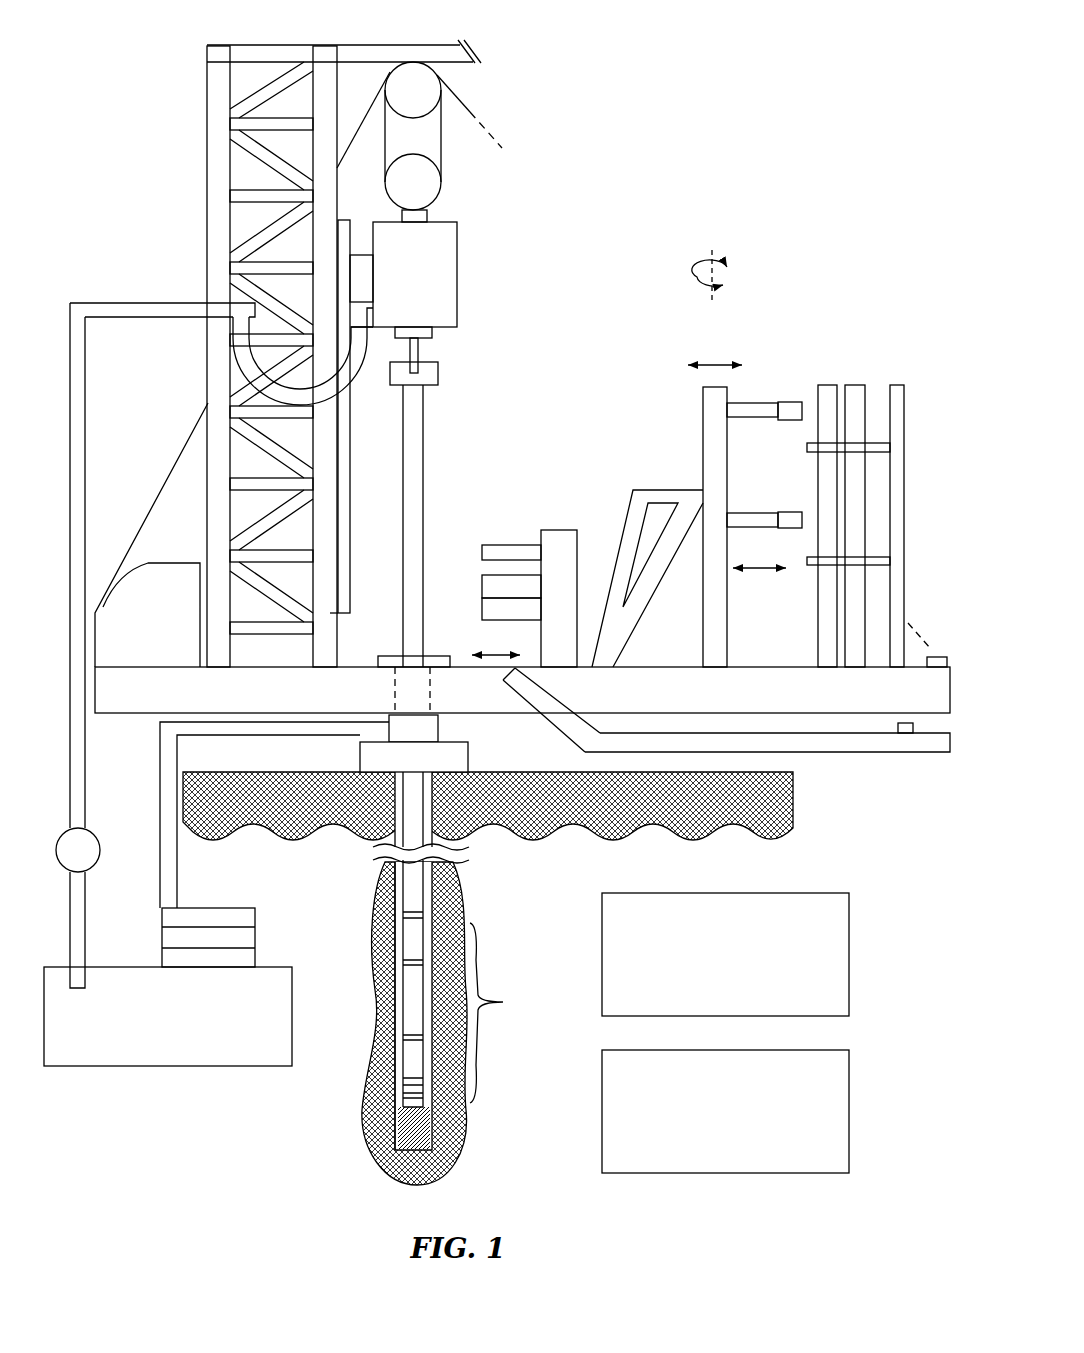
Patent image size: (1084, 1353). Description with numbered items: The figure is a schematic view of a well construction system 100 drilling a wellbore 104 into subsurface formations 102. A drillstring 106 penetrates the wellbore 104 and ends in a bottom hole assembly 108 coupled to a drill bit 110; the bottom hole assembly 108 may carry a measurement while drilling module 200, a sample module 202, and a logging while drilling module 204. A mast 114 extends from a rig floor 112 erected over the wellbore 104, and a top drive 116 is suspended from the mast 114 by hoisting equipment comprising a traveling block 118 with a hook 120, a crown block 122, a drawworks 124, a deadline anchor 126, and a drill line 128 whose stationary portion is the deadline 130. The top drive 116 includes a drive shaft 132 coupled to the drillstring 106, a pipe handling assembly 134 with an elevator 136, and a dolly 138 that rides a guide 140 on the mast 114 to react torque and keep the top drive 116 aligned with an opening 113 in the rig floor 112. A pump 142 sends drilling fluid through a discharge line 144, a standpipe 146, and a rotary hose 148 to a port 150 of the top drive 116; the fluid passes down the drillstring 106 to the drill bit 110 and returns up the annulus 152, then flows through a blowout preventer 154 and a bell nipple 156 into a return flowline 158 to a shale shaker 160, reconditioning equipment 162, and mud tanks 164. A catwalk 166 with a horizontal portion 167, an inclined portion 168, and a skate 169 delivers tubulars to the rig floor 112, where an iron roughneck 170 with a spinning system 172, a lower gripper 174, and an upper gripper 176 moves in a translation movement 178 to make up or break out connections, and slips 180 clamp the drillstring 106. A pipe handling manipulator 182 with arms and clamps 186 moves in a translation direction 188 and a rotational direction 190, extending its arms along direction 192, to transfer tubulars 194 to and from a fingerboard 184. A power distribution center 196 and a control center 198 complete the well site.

The well construction system 100 is at (738, 103).
The subsurface formations 102 is at (298, 808).
The wellbore 104 is at (385, 878).
The drillstring 106 is at (424, 472).
The bottom hole assembly 108 is at (503, 1002).
The drill bit 110 is at (400, 1145).
The rig floor 112 is at (755, 706).
The opening 113 is at (394, 690).
The mast 114 is at (205, 97).
The top drive 116 is at (457, 252).
The traveling block 118 is at (439, 180).
The hook 120 is at (428, 208).
The crown block 122 is at (436, 78).
The drawworks 124 is at (165, 590).
The deadline anchor 126 is at (940, 657).
The drill line 128 is at (441, 122).
The deadline 130 is at (472, 112).
The drive shaft 132 is at (432, 333).
The pipe handling assembly 134 is at (418, 352).
The elevator 136 is at (438, 387).
The dolly 138 is at (360, 253).
The guide 140 is at (347, 430).
The pump 142 is at (94, 833).
The discharge line 144 is at (85, 737).
The standpipe 146 is at (136, 317).
The rotary hose 148 is at (243, 360).
The port 150 is at (371, 360).
The annulus 152 is at (396, 903).
The blowout preventer 154 is at (360, 757).
The bell nipple 156 is at (438, 732).
The return flowline 158 is at (246, 724).
The shale shaker 160 is at (205, 908).
The reconditioning equipment 162 is at (152, 935).
The mud tanks 164 is at (125, 1066).
The catwalk 166 is at (858, 765).
The horizontal portion 167 is at (798, 752).
The inclined portion 168 is at (545, 690).
The skate 169 is at (905, 735).
The iron roughneck 170 is at (560, 530).
The spinning system 172 is at (497, 546).
The lower gripper 174 is at (482, 609).
The upper gripper 176 is at (482, 583).
The translation movement 178 is at (494, 655).
The slips 180 is at (395, 655).
The pipe handling manipulator 182 is at (703, 397).
The fingerboard 184 is at (897, 385).
The arms and clamps 186 is at (792, 402).
The translation direction 188 is at (714, 364).
The rotational direction 190 is at (694, 273).
The direction 192 is at (760, 568).
The tubulars 194 is at (851, 385).
The power distribution center 196 is at (690, 975).
The control center 198 is at (690, 1130).
The measurement while drilling module 200 is at (412, 963).
The sample module 202 is at (412, 932).
The logging while drilling module 204 is at (412, 1063).